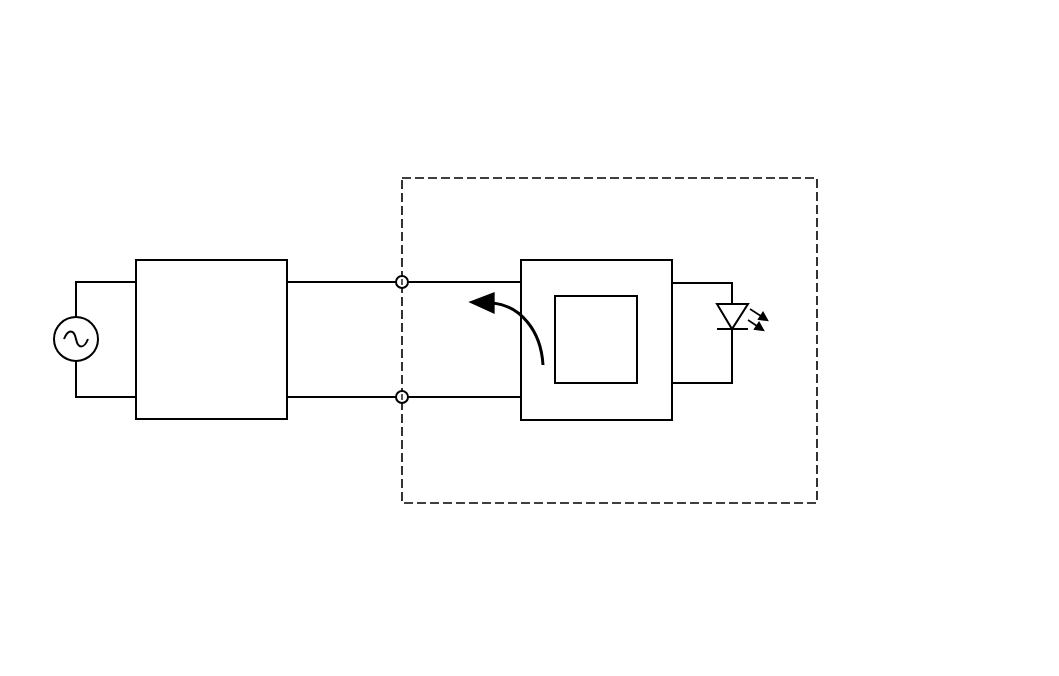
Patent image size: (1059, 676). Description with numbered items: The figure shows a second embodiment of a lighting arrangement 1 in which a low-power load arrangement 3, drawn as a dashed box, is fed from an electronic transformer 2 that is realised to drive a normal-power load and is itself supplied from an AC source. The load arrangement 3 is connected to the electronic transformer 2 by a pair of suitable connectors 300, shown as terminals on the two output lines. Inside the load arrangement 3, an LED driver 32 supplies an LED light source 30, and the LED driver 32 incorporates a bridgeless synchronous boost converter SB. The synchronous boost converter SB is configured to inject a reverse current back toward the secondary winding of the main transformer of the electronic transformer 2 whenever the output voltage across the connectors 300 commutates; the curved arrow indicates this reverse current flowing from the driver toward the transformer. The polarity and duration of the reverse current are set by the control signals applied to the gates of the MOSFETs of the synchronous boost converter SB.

The lighting arrangement 1 is at (677, 112).
The electronic transformer 2 is at (175, 260).
The low-power load arrangement 3 is at (797, 178).
The connectors 300 is at (397, 279).
The LED driver 32 is at (663, 260).
The bridgeless synchronous boost converter SB is at (627, 383).
The LED light source 30 is at (745, 303).